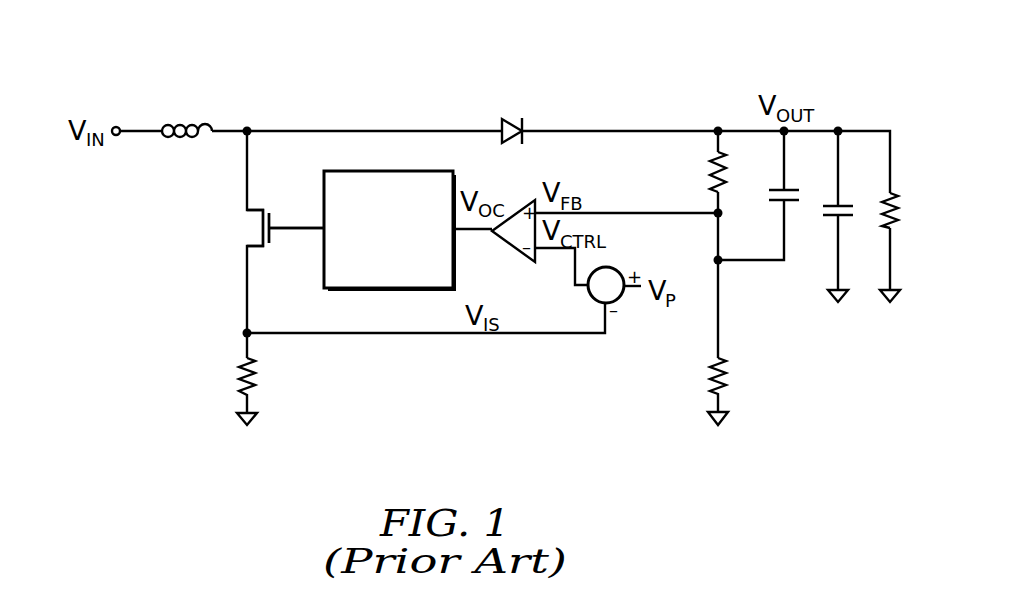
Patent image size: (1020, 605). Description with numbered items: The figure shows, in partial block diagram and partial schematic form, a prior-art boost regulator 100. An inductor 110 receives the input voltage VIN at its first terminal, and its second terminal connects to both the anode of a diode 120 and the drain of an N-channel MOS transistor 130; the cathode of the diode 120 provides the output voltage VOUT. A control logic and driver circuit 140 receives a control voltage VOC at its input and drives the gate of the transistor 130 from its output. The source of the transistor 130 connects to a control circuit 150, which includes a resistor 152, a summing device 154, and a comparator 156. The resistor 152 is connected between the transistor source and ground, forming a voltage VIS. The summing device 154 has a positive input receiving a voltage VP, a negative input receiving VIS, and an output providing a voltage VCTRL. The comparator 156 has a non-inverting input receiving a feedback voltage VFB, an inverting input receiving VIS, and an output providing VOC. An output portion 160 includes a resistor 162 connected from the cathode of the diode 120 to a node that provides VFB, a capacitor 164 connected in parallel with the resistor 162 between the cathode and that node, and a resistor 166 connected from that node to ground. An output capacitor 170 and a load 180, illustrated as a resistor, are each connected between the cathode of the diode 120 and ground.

The boost regulator 100 is at (117, 46).
The inductor 110 is at (199, 124).
The diode 120 is at (524, 122).
The N-channel MOS transistor 130 is at (258, 211).
The control logic and driver circuit 140 is at (382, 171).
The control circuit 150 is at (430, 384).
The resistor 152 is at (235, 369).
The summing device 154 is at (616, 270).
The comparator 156 is at (520, 206).
The output portion 160 is at (661, 354).
The resistor 162 is at (711, 173).
The capacitor 164 is at (774, 188).
The resistor 166 is at (727, 380).
The output capacitor 170 is at (832, 205).
The load 180 is at (886, 200).